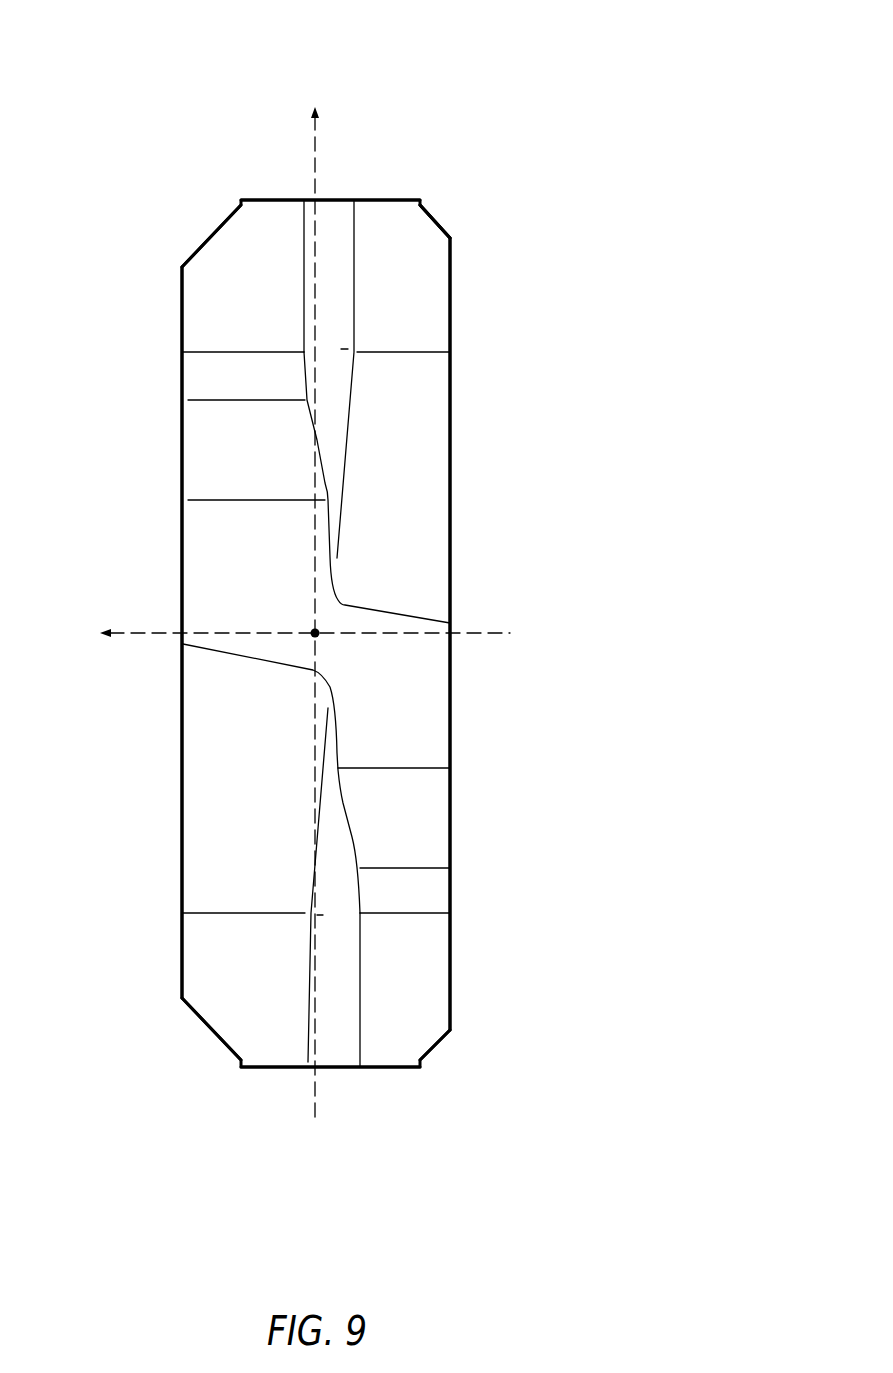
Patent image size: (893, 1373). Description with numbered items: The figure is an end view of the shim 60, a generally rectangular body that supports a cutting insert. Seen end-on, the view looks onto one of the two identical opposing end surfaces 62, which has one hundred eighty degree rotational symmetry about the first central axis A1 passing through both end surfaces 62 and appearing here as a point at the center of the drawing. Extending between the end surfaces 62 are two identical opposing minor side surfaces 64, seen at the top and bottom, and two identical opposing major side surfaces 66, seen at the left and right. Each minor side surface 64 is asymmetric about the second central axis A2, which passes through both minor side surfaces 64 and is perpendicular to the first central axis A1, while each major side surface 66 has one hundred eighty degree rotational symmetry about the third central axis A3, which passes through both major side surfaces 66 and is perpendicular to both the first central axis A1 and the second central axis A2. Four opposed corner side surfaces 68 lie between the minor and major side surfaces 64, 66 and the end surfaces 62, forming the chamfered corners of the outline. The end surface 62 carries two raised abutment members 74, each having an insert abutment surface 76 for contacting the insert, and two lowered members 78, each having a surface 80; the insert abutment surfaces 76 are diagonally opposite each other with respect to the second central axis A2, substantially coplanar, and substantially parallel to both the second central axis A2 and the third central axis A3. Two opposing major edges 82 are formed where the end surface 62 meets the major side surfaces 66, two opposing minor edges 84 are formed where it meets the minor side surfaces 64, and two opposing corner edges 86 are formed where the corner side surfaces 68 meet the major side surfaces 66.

The shim 60 is at (509, 62).
The end surface 62 is at (420, 669).
The minor side surface 64 is at (367, 194).
The major side surface 66 is at (145, 600).
The corner side surface 68 is at (204, 228).
The raised abutment member 74 is at (200, 319).
The insert abutment surface 76 is at (283, 237).
The lowered member 78 is at (428, 262).
The surface 80 is at (426, 315).
The major edge 82 is at (165, 520).
The minor edge 84 is at (331, 196).
The corner edge 86 is at (455, 222).
The first central axis A1 is at (313, 628).
The second central axis A2 is at (293, 615).
The third central axis A3 is at (305, 652).